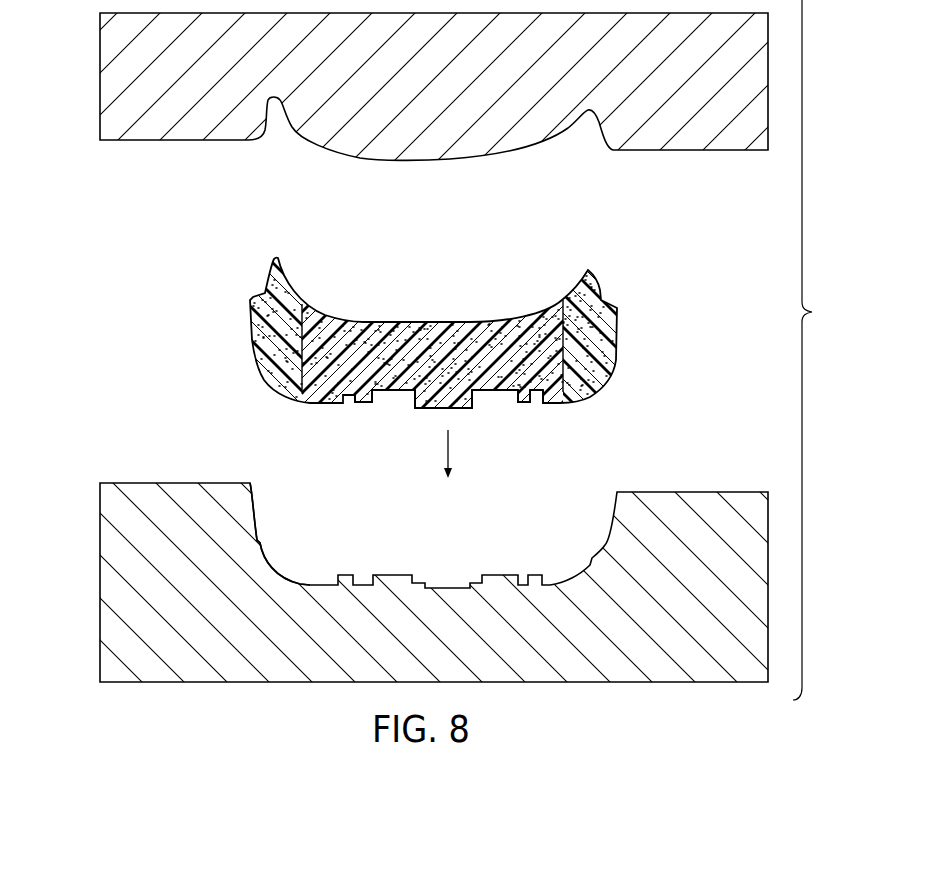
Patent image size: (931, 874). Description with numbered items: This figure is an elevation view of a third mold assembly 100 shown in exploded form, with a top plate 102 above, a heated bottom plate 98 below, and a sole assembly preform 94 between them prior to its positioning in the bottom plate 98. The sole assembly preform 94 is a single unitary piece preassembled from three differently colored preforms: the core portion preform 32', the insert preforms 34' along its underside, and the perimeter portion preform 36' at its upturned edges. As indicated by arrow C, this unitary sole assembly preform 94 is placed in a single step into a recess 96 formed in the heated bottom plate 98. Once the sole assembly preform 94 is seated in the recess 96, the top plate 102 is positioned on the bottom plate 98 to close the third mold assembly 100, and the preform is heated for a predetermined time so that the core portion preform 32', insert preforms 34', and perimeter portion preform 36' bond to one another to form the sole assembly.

The top plate 102 is at (452, 86).
The bottom plate 98 is at (700, 608).
The recess 96 is at (256, 513).
The sole assembly preform 94 is at (441, 333).
The third mold assembly 100 is at (110, 322).
The core portion preform 32' is at (449, 348).
The insert preforms 34' is at (451, 412).
The perimeter portion preform 36' is at (594, 326).